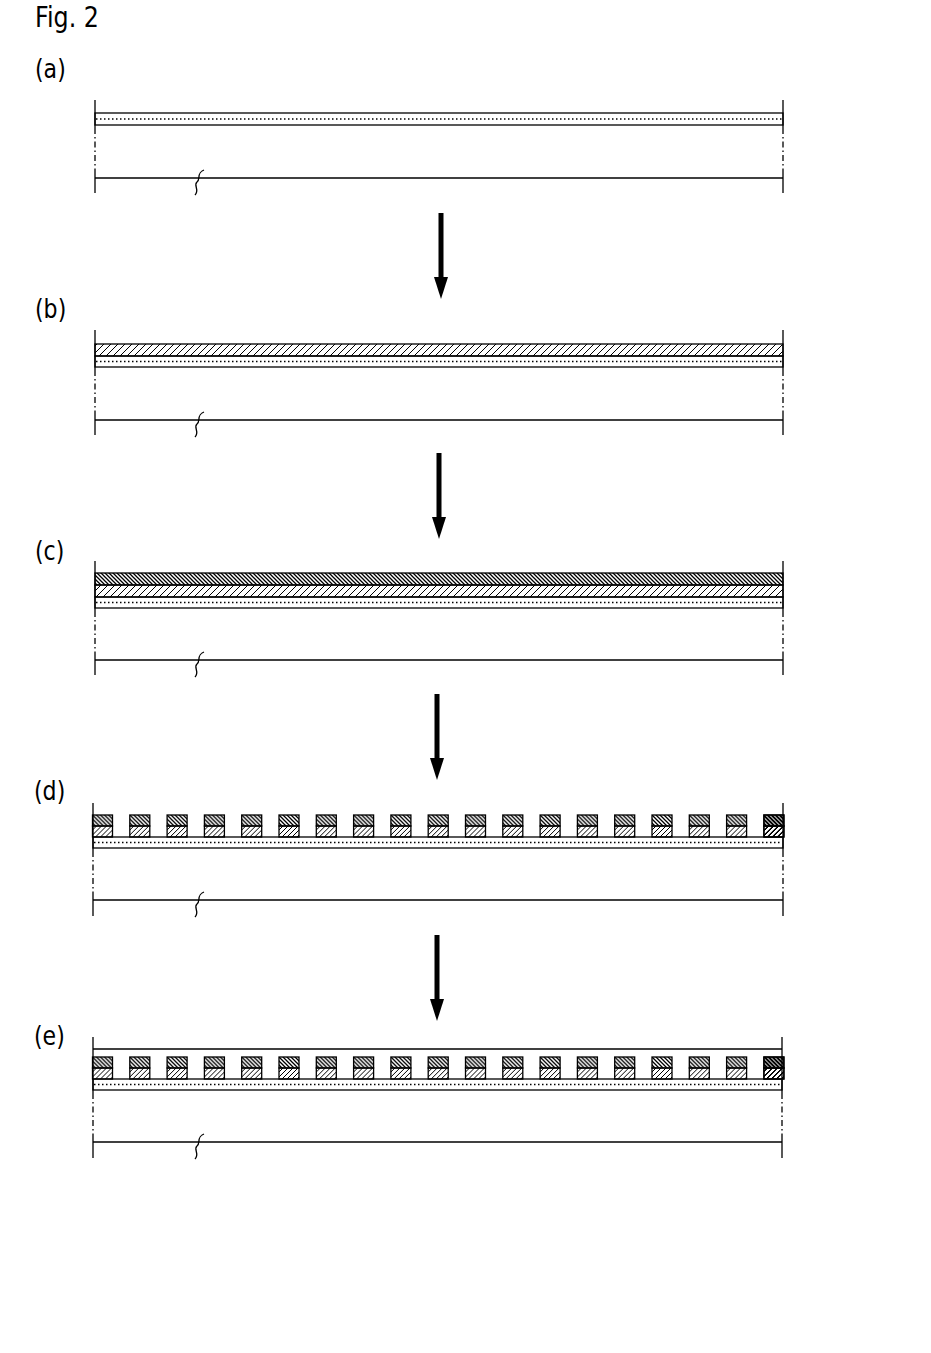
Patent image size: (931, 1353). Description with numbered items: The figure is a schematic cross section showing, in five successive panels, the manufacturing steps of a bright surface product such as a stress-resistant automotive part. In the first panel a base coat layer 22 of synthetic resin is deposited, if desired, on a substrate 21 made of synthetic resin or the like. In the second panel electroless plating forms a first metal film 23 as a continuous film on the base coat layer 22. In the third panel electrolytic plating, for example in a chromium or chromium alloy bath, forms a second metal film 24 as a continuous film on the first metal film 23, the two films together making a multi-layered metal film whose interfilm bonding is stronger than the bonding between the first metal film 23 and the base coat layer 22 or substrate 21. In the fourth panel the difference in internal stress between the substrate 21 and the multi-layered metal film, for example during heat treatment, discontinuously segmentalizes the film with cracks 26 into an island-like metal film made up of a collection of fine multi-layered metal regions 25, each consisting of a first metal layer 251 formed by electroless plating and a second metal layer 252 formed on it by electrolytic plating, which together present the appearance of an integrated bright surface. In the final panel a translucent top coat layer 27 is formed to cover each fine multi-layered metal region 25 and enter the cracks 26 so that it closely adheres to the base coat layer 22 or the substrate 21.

The substrate 21 is at (438, 645).
The base coat layer 22 is at (646, 124).
The first metal film 23 is at (590, 347).
The second metal film 24 is at (528, 577).
The fine multi-layered metal region 25 is at (620, 813).
The crack 26 is at (680, 832).
The top coat layer 27 is at (193, 1050).
The first metal layer 251 is at (783, 833).
The second metal layer 252 is at (783, 819).